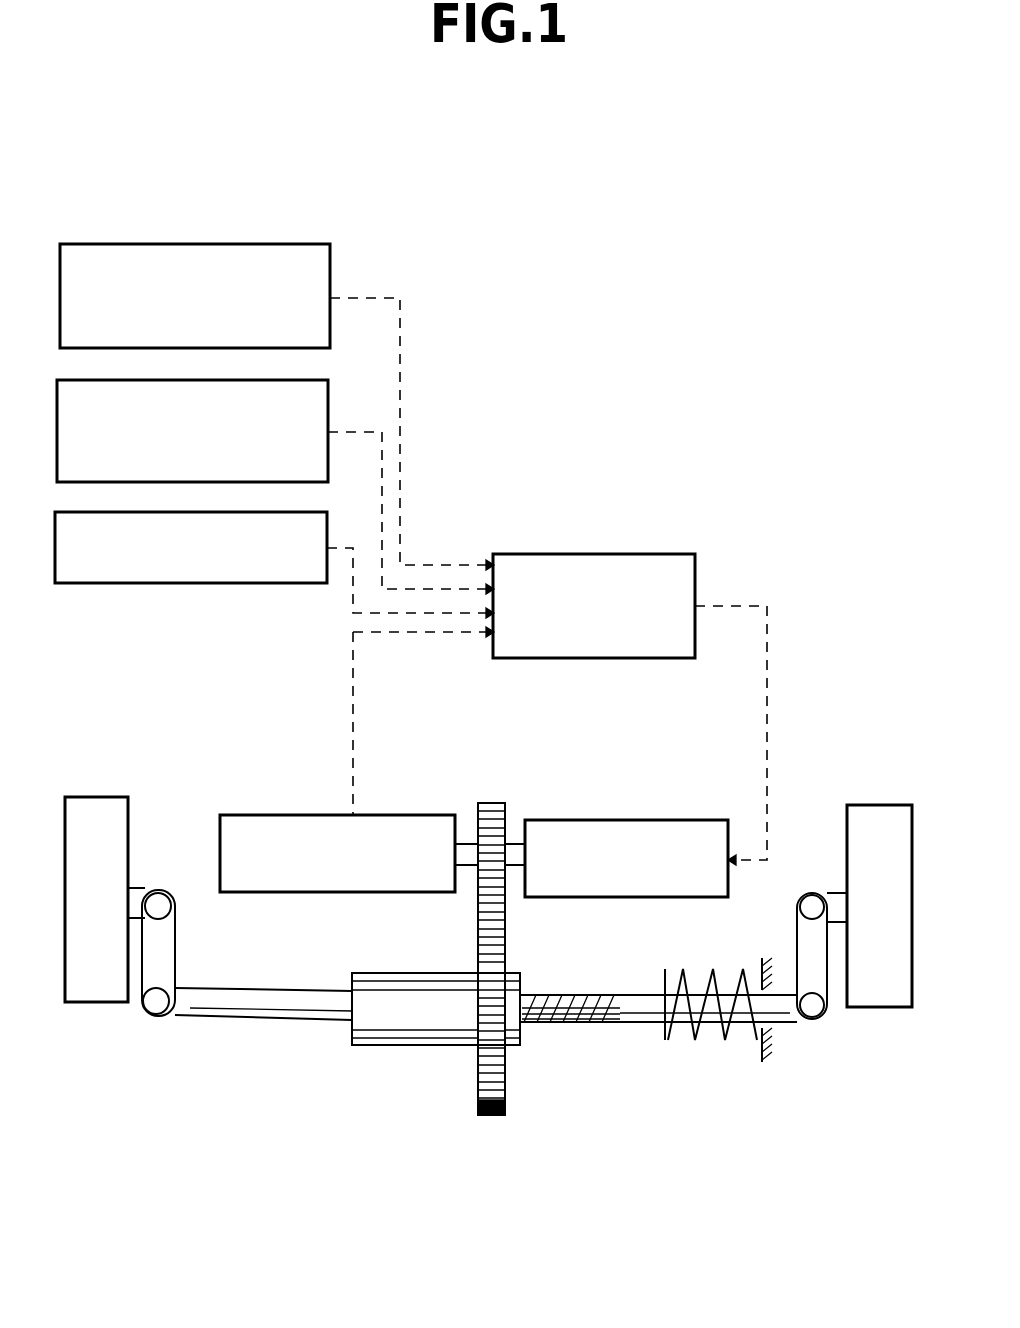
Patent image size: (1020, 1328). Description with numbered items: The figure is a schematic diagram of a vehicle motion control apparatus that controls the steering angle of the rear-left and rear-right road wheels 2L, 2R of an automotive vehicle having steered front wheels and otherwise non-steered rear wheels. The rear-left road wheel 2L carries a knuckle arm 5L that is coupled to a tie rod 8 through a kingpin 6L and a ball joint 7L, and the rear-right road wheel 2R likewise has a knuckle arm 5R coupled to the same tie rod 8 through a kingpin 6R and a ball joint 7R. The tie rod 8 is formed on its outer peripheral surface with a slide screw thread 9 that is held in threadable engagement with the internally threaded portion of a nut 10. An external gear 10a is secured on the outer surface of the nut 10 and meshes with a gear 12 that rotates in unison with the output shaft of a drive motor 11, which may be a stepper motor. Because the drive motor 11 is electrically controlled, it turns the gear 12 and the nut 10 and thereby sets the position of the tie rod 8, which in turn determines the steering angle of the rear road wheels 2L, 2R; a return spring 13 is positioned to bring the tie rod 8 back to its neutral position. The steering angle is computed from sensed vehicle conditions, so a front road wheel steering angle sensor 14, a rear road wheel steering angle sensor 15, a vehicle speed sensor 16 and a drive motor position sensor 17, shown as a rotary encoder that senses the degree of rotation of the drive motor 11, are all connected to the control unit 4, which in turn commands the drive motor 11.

The rear-left road wheel 2L is at (98, 797).
The rear-right road wheel 2R is at (878, 812).
The control unit 4 is at (598, 554).
The knuckle arm 5L is at (143, 892).
The knuckle arm 5R is at (835, 893).
The kingpin 6L is at (165, 900).
The kingpin 6R is at (798, 902).
The ball joint 7L is at (150, 1005).
The ball joint 7R is at (812, 1012).
The tie rod 8 is at (258, 1020).
The slide screw thread 9 is at (568, 1026).
The nut 10 is at (353, 968).
The external gear 10a is at (490, 1118).
The drive motor 11 is at (612, 818).
The gear 12 is at (492, 802).
The return spring 13 is at (698, 1033).
The front road wheel steering angle sensor 14 is at (333, 266).
The rear road wheel steering angle sensor 15 is at (330, 398).
The vehicle speed sensor 16 is at (203, 585).
The drive motor position sensor 17 is at (355, 893).